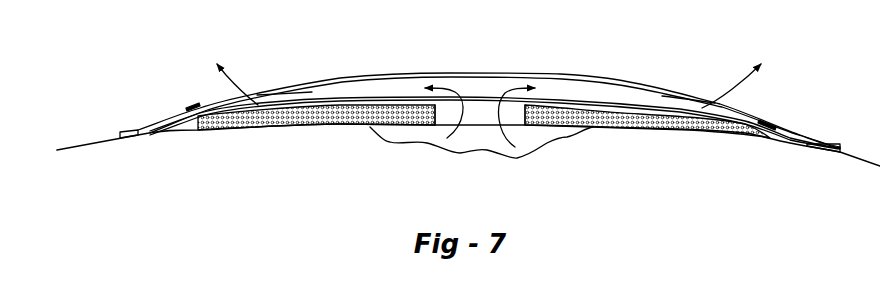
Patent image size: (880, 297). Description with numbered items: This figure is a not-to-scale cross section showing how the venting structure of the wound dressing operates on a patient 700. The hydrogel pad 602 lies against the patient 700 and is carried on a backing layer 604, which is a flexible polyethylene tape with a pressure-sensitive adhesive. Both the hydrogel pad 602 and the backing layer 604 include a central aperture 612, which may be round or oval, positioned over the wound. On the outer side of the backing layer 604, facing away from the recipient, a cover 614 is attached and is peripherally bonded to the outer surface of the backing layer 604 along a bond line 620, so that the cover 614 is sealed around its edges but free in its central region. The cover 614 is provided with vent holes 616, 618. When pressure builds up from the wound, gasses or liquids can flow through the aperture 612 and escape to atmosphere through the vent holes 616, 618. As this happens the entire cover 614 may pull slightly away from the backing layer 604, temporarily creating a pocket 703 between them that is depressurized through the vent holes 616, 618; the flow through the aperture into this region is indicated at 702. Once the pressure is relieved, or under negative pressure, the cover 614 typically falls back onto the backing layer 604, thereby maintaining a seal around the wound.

The patient 700 is at (468, 162).
The hydrogel pad 602 is at (222, 125).
The backing layer 604 is at (133, 130).
The central aperture 612 is at (473, 117).
The cover 614 is at (580, 75).
The vent hole 616 is at (253, 92).
The vent hole 618 is at (715, 95).
The peripheral bond line 620 is at (193, 108).
The air flow region 702 is at (400, 140).
The pocket 703 is at (565, 92).